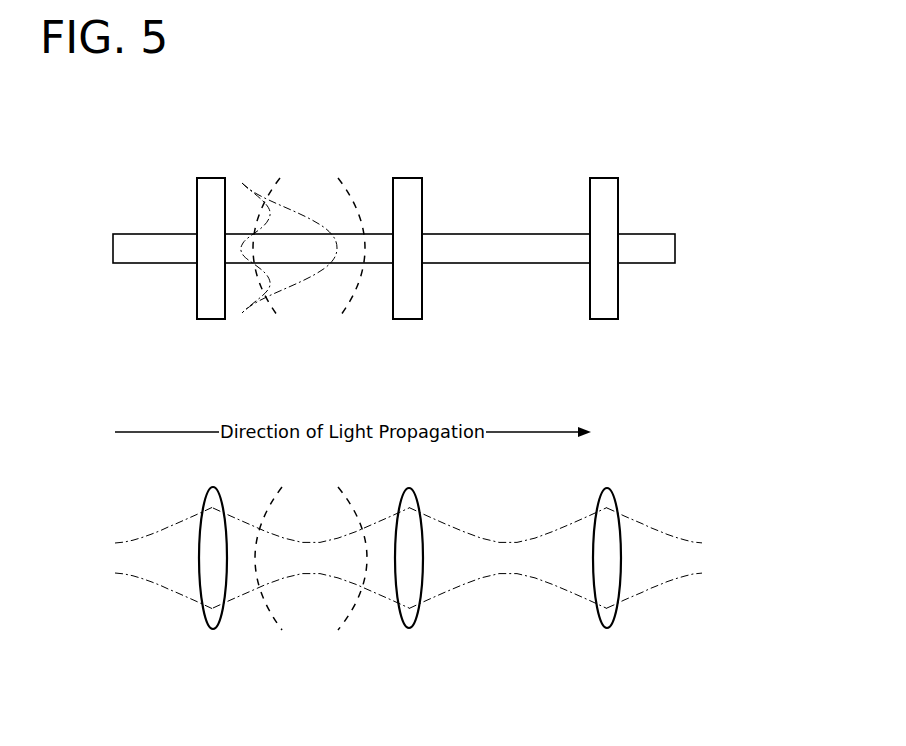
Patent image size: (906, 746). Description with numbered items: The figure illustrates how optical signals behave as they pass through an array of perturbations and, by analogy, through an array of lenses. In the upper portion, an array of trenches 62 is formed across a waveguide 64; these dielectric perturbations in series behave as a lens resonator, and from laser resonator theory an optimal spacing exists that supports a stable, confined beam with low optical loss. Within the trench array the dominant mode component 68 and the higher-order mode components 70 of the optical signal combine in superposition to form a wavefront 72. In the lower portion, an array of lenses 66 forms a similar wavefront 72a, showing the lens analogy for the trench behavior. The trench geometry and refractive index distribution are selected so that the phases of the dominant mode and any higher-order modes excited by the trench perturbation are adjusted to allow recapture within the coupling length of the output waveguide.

The trenches 62 is at (209, 186).
The waveguide 64 is at (118, 245).
The lenses 66 is at (210, 617).
The dominant mode component 68 is at (310, 217).
The higher-order mode components 70 is at (258, 197).
The wavefront 72 is at (365, 320).
The similar wavefront 72a is at (368, 628).